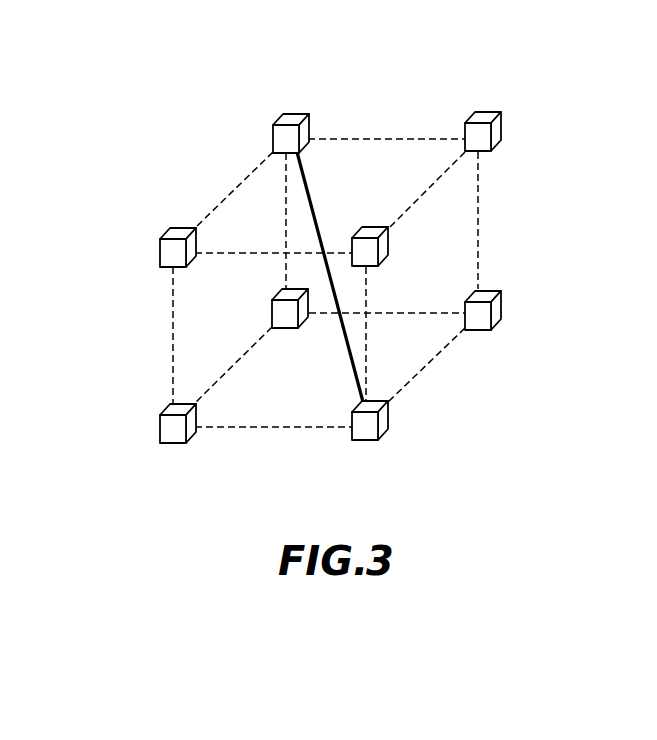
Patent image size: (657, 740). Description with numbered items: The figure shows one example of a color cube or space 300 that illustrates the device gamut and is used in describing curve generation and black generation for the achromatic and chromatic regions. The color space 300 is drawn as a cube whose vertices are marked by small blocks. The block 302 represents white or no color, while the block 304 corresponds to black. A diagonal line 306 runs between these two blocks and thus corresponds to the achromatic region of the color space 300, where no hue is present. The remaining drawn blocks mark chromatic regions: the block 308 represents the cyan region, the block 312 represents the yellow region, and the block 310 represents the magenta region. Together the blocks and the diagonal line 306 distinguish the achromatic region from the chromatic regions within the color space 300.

The color space 300 is at (532, 222).
The block representing white 302 is at (388, 422).
The block corresponding to black 304 is at (273, 124).
The diagonal line 306 is at (313, 212).
The block representing cyan region 308 is at (162, 411).
The block representing magenta region 310 is at (502, 309).
The block representing yellow region 312 is at (389, 250).